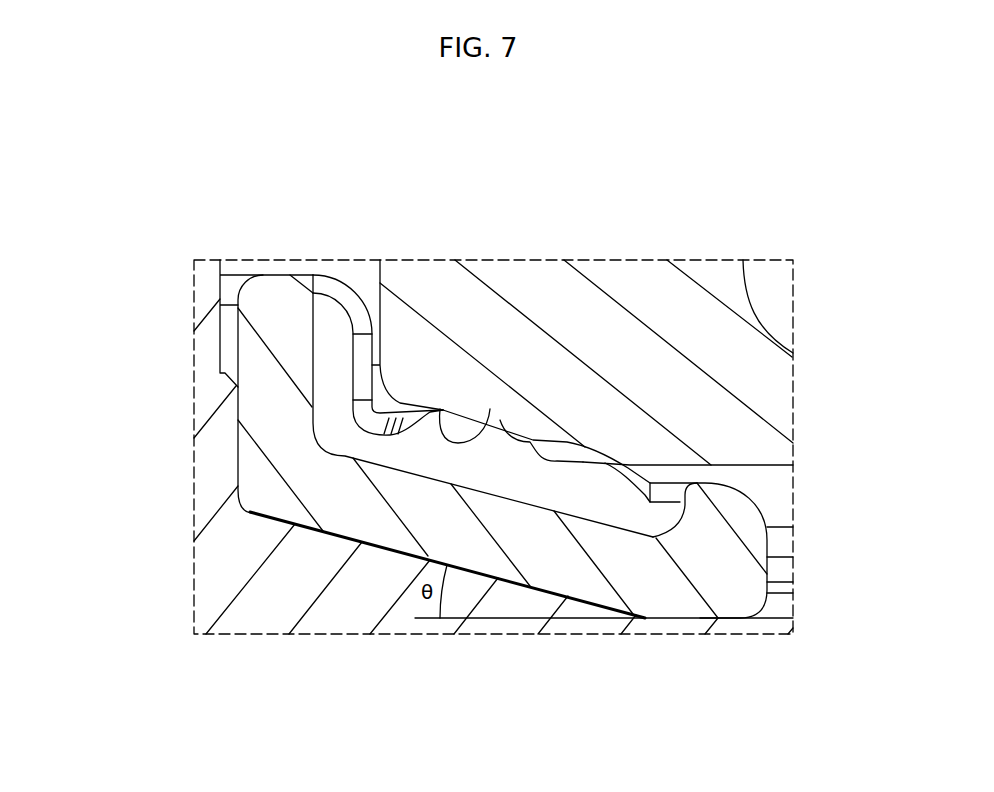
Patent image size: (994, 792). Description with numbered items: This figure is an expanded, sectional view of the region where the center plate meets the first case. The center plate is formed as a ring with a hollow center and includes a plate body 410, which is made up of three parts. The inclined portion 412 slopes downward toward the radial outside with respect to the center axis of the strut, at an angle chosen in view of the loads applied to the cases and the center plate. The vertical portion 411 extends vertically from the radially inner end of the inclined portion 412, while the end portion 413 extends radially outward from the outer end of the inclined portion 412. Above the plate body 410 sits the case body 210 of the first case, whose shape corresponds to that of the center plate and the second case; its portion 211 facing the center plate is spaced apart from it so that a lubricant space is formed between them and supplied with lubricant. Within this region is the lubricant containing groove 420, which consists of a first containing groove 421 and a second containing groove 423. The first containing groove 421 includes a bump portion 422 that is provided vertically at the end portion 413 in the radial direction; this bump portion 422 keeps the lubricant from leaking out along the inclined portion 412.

The case body 210 is at (630, 300).
The portion facing the center plate 211 is at (492, 408).
The plate body 410 is at (118, 388).
The vertical portion 411 is at (270, 412).
The inclined portion 412 is at (362, 513).
The end portion 413 is at (395, 405).
The lubricant containing groove 420 is at (713, 180).
The first containing groove 421 is at (595, 500).
The bump portion 422 is at (685, 523).
The second containing groove 423 is at (522, 438).